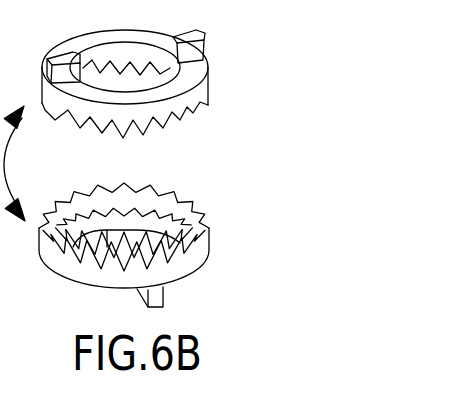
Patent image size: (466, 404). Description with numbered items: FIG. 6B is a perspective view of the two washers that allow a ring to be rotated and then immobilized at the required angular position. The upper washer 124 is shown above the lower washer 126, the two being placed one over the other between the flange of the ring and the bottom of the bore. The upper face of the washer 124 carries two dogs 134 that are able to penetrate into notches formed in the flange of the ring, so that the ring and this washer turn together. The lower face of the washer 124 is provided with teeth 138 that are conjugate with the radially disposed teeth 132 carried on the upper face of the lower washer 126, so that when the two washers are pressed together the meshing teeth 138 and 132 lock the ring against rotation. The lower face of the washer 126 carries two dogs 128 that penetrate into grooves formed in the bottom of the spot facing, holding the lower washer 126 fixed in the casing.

The washer 124 is at (232, 95).
The lower washer 126 is at (230, 255).
The dogs 128 is at (163, 297).
The teeth 132 is at (196, 203).
The dogs 134 is at (207, 42).
The teeth 138 is at (182, 123).